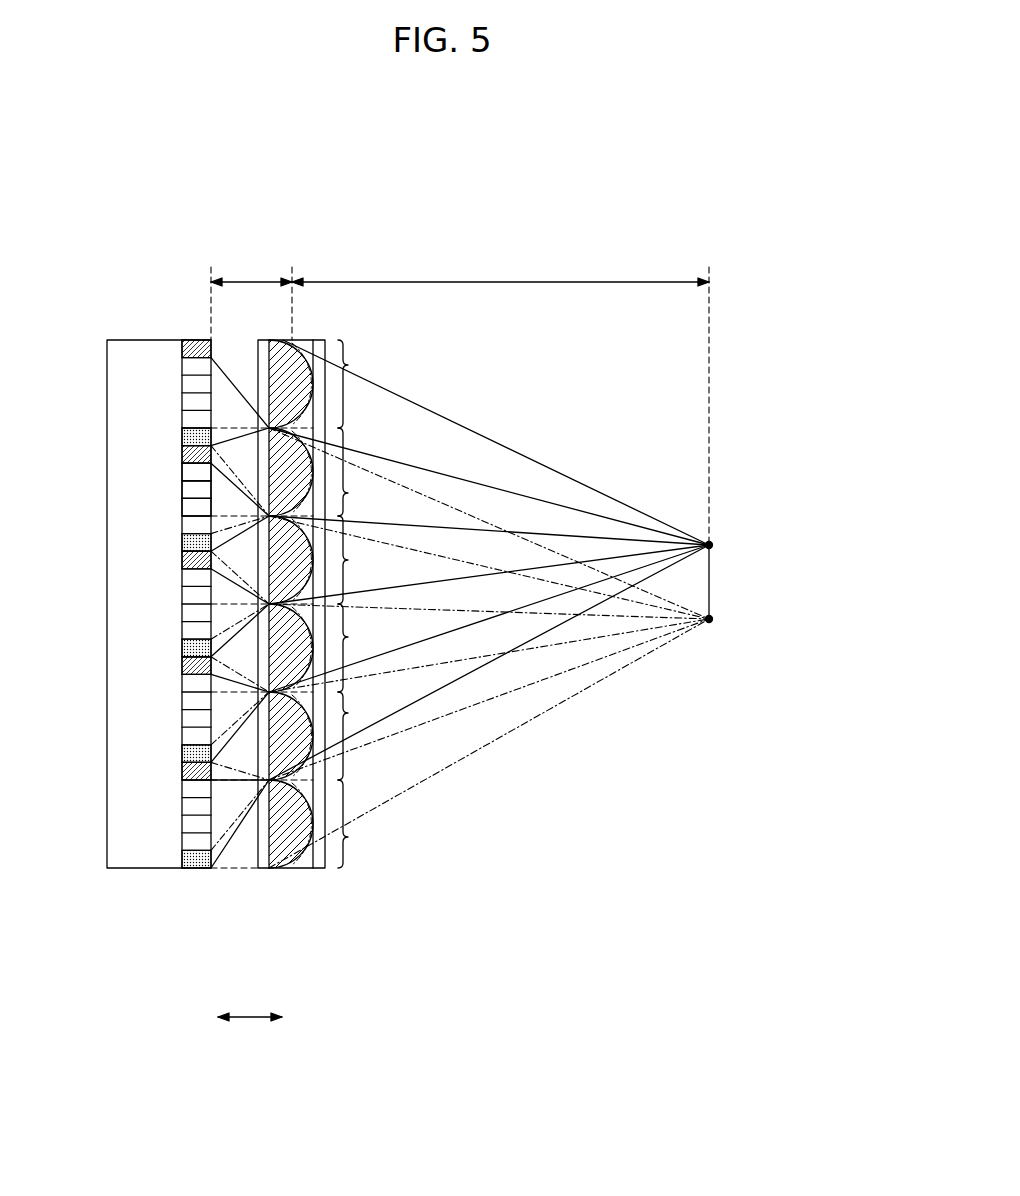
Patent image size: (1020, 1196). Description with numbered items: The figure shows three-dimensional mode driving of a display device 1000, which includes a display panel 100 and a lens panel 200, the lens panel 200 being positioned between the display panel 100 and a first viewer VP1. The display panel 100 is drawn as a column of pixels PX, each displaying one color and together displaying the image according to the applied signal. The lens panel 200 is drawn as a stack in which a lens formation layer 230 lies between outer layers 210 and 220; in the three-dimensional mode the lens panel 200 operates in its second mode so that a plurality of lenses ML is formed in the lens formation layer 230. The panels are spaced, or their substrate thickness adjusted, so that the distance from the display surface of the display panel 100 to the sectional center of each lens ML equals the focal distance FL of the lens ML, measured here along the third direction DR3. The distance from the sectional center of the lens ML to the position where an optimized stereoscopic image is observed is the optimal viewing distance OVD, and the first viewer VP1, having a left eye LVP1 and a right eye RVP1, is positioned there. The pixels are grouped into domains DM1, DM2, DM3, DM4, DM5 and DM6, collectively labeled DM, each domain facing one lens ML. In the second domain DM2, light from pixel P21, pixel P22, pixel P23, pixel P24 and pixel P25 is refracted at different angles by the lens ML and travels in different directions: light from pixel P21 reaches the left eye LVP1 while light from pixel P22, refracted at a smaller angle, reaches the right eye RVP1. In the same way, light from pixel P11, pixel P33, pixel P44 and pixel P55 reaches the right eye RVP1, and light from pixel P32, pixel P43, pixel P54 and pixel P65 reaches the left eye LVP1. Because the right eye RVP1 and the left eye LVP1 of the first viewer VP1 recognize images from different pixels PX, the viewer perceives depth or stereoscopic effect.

The display device 1000 is at (150, 298).
The display panel 100 is at (211, 878).
The pixel PX is at (202, 842).
The lens panel 200 is at (355, 943).
The first base layer 210 is at (263, 860).
The lens formation layer 230 is at (292, 868).
The second base layer 220 is at (320, 858).
The lens ML is at (297, 732).
The (1-1) pixel P11 is at (182, 349).
The (2-1) pixel P21 is at (182, 437).
The (2-2) pixel P22 is at (182, 454).
The (2-3) pixel P23 is at (182, 472).
The (2-4) pixel P24 is at (182, 490).
The (2-5) pixel P25 is at (182, 508).
The (3-2) pixel P32 is at (182, 543).
The (3-3) pixel P33 is at (182, 560).
The (4-3) pixel P43 is at (182, 648).
The (4-4) pixel P44 is at (182, 666).
The (5-4) pixel P54 is at (182, 754).
The (5-5) pixel P55 is at (182, 771).
The (6-5) pixel P65 is at (182, 859).
The first display module region DM1 is at (365, 384).
The second domain DM2 is at (365, 472).
The third display module region DM3 is at (365, 560).
The fourth display module region DM4 is at (365, 648).
The fifth display module region DM5 is at (365, 736).
The sixth display module region DM6 is at (365, 824).
The display module regions DM is at (668, 760).
The right eye RVP1 is at (712, 543).
The left eye LVP1 is at (712, 622).
The first viewer VP1 is at (714, 545).
The focal distance FL is at (251, 268).
The optimal viewing distance OVD is at (500, 268).
The third direction DR3 is at (275, 1017).